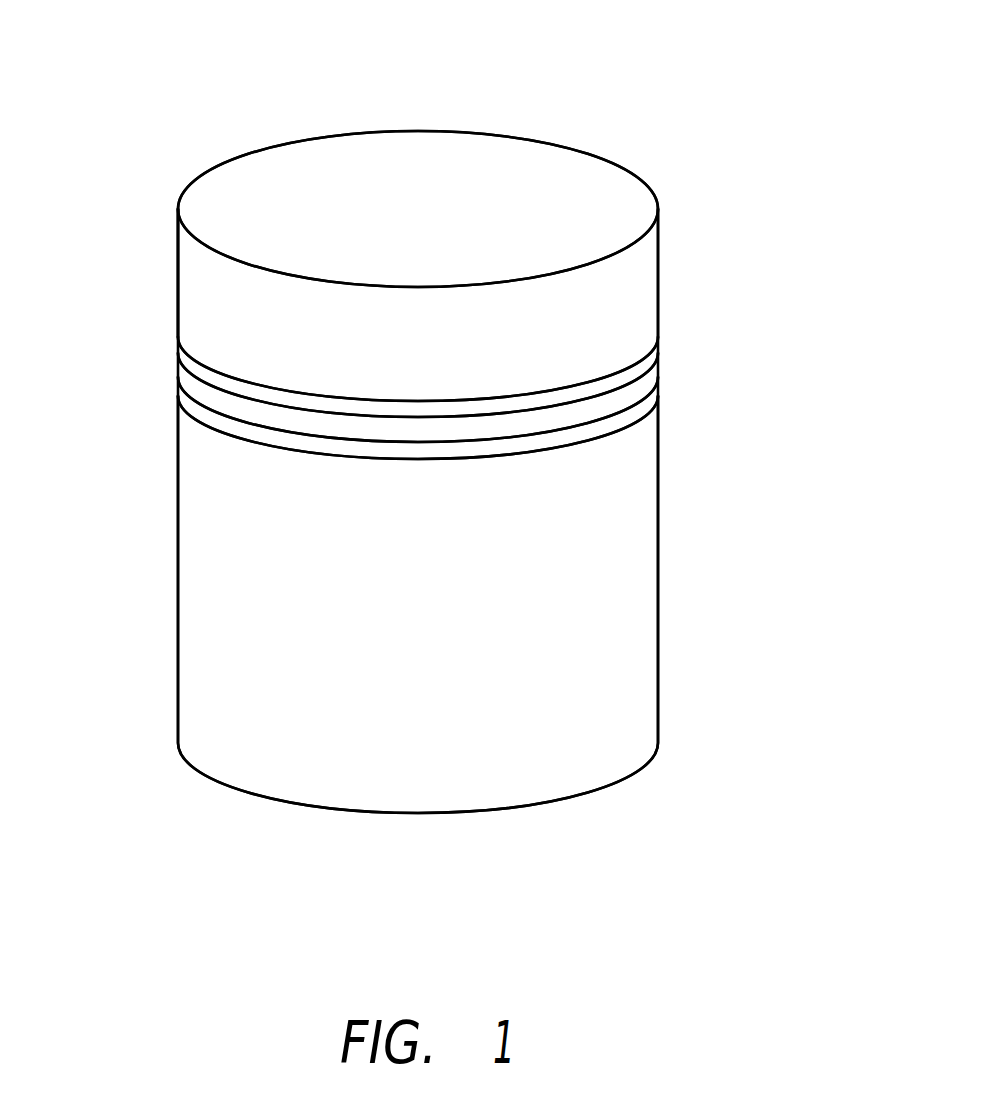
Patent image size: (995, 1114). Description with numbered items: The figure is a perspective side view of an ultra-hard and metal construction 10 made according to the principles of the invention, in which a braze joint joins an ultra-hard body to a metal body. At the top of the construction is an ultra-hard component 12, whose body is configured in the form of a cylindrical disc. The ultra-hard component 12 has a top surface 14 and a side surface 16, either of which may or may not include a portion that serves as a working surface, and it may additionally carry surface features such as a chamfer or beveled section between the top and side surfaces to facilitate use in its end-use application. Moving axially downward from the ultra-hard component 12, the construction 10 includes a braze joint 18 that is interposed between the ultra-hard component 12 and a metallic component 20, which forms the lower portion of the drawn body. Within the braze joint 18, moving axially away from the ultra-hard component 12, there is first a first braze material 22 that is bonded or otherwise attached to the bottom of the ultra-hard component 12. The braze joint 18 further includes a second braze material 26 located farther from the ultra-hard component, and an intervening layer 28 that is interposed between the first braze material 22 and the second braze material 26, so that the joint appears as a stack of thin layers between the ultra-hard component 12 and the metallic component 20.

The ultra-hard and metal construction 10 is at (733, 181).
The ultra-hard component 12 is at (627, 298).
The top surface 14 is at (512, 190).
The side surface 16 is at (210, 277).
The braze joint 18 is at (672, 385).
The metallic component 20 is at (605, 632).
The first braze material 22 is at (185, 352).
The second braze material 26 is at (242, 428).
The intervening layer 28 is at (608, 395).